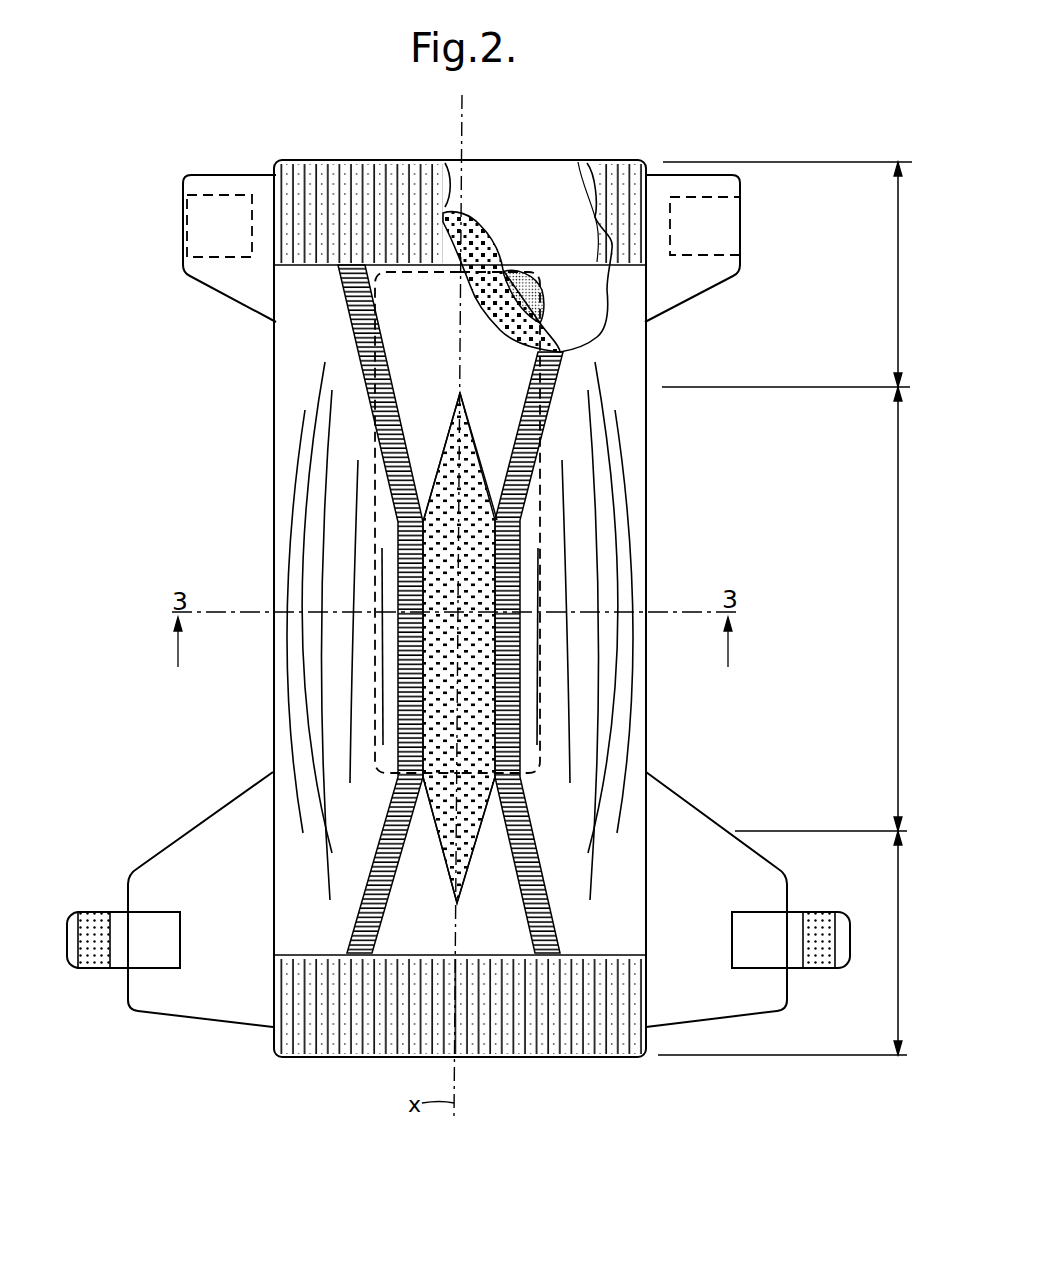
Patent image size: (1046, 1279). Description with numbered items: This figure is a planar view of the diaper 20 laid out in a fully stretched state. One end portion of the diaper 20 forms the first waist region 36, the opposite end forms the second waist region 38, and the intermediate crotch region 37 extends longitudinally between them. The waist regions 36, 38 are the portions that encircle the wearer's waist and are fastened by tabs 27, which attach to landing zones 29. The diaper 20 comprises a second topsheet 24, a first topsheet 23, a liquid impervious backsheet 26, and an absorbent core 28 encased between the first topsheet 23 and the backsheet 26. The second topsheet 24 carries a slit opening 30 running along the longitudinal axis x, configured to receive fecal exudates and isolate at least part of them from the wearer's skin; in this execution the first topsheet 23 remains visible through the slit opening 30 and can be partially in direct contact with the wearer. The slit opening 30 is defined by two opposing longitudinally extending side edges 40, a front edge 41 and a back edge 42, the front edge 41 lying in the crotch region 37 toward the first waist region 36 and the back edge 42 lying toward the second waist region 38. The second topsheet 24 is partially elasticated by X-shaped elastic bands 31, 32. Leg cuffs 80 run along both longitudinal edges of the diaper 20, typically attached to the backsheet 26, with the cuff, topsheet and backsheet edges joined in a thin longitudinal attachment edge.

The diaper 20 is at (473, 567).
The first topsheet 23 is at (480, 240).
The second topsheet 24 is at (645, 422).
The liquid impervious backsheet 26 is at (553, 172).
The tabs 27 is at (72, 958).
The absorbent core 28 is at (537, 267).
The landing zones 29 is at (202, 224).
The slit opening 30 is at (467, 783).
The elastic band 31 is at (520, 640).
The elastic band 32 is at (398, 640).
The first waist region 36 is at (800, 274).
The crotch region 37 is at (835, 609).
The second waist region 38 is at (796, 943).
The longitudinally extending side edges 40 is at (449, 631).
The front edge 41 is at (460, 393).
The back edge 42 is at (455, 903).
The leg cuffs 80 is at (273, 418).